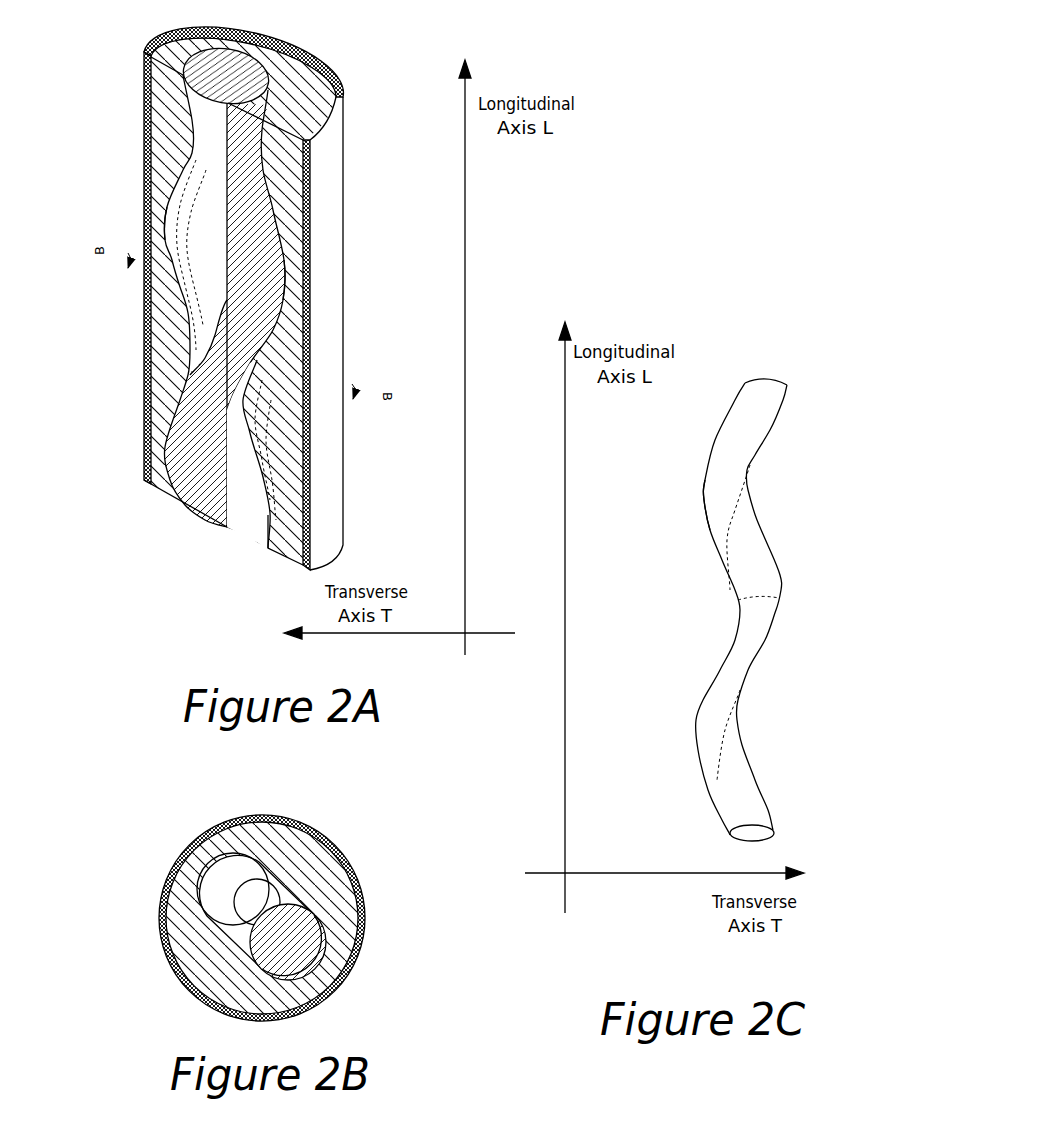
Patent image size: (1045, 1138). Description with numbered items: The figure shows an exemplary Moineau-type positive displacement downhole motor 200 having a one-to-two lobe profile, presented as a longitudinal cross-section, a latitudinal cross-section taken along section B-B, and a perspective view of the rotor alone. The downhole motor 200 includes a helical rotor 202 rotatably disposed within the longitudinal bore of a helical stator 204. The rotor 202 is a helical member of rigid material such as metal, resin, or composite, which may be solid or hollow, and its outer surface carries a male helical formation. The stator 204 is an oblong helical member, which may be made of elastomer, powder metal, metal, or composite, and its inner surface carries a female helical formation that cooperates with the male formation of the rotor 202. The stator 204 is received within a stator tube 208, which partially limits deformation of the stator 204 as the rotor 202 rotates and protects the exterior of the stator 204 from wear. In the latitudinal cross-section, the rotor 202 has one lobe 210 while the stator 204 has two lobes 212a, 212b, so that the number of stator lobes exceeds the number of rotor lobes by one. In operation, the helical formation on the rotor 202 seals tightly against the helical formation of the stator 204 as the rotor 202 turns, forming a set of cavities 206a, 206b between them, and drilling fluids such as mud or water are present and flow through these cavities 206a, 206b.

In FIG. 2A, the Moineau-type positive displacement downhole motor 200 is at (118, 659).
In FIG. 2A, the helical rotor 202 is at (196, 512).
In FIG. 2C, the helical rotor 202 is at (699, 749).
In FIG. 2A, the helical stator 204 is at (157, 490).
In FIG. 2A, the cavity 206a is at (215, 245).
In FIG. 2A, the cavity 206b is at (257, 531).
In FIG. 2A, the stator tube 208 is at (345, 457).
In FIG. 2A, the rotor lobe 210 is at (262, 253).
In FIG. 2B, the rotor lobe 210 is at (303, 953).
In FIG. 2C, the rotor lobe 210 is at (752, 350).
In FIG. 2A, the stator lobe 212a is at (289, 295).
In FIG. 2B, the stator lobe 212a is at (321, 971).
In FIG. 2A, the stator lobe 212b is at (162, 215).
In FIG. 2B, the stator lobe 212b is at (190, 857).